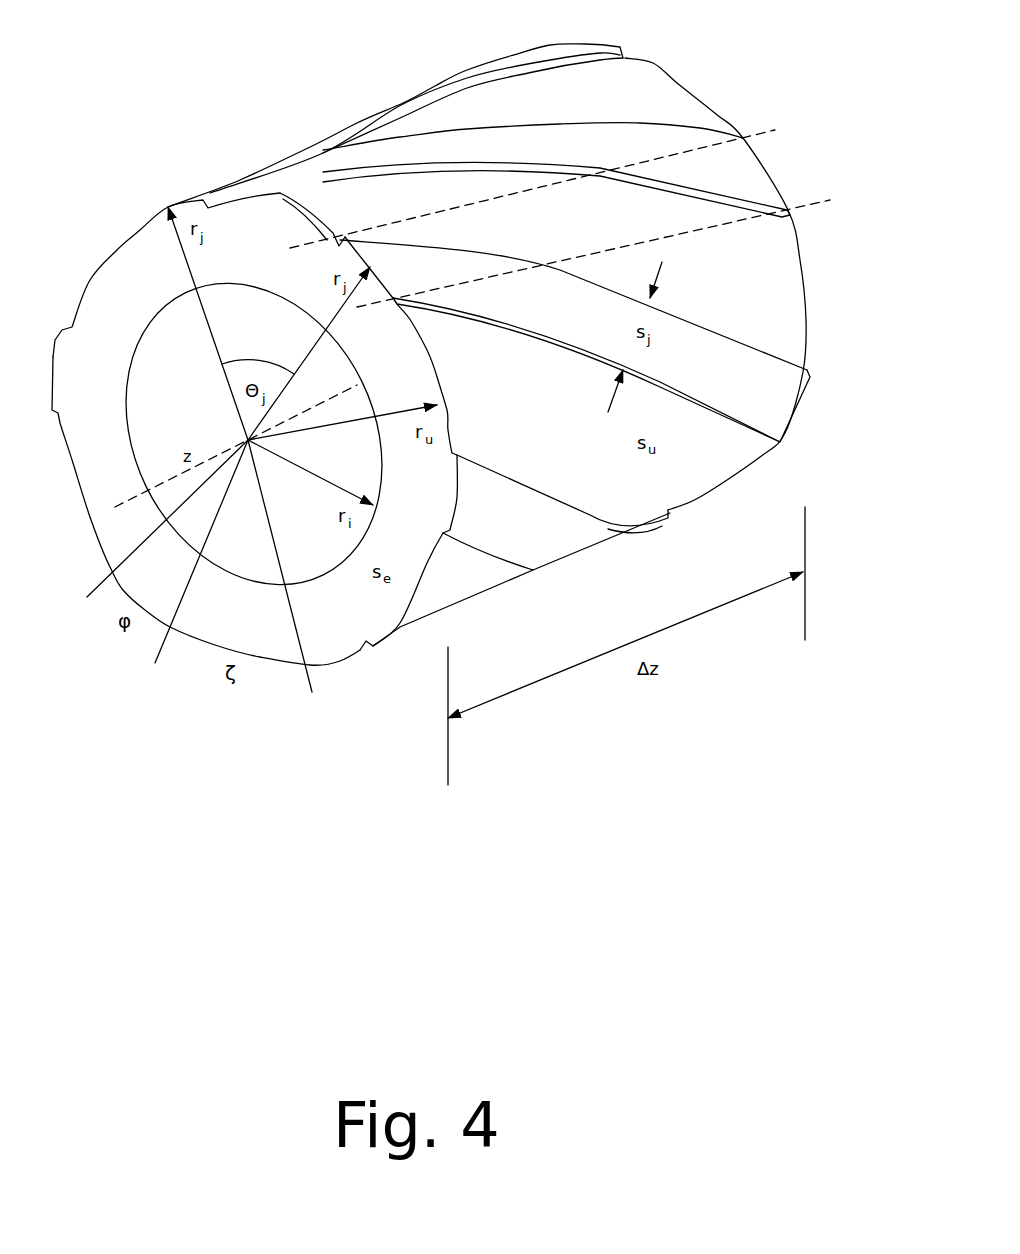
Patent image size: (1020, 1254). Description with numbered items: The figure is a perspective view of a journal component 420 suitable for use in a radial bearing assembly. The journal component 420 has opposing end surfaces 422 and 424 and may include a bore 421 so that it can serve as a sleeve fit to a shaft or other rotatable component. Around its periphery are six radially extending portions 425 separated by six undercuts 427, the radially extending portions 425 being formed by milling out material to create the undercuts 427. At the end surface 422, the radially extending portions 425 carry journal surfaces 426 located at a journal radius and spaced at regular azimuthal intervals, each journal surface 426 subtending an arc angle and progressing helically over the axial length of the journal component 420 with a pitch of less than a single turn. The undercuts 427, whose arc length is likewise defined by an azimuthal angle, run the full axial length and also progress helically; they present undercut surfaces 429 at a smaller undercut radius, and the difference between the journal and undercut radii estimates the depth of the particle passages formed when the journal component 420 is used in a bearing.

The journal component 420 is at (204, 96).
The bore 421 is at (315, 580).
The end surface 422 is at (141, 311).
The end surface 424 is at (678, 83).
The radially extending portions 425 is at (170, 204).
The journal surfaces 426 is at (723, 368).
The undercuts 427 is at (312, 172).
The undercut surfaces 429 is at (749, 297).